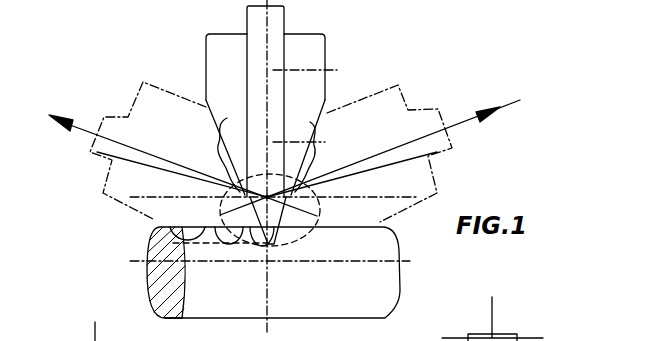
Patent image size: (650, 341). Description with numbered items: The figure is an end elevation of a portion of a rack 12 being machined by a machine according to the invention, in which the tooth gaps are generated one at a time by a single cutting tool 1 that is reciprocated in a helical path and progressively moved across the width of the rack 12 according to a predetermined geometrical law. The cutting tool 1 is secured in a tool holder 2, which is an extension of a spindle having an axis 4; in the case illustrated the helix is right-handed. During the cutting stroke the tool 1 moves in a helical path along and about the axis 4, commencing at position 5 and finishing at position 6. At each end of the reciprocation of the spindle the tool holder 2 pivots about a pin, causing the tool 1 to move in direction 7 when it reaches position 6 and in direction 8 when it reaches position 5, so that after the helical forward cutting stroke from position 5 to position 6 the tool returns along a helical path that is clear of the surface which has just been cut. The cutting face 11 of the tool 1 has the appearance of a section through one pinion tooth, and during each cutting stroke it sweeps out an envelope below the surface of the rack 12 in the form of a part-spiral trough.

The cutting tool 1 is at (285, 27).
The tool holder 2 is at (220, 63).
The axis 4 is at (266, 195).
The commencing position 5 is at (223, 246).
The finishing position 6 is at (322, 214).
The direction of tool movement at finish 7 is at (74, 128).
The direction of tool movement at start 8 is at (512, 108).
The cutting face 11 is at (250, 244).
The rack 12 is at (402, 282).